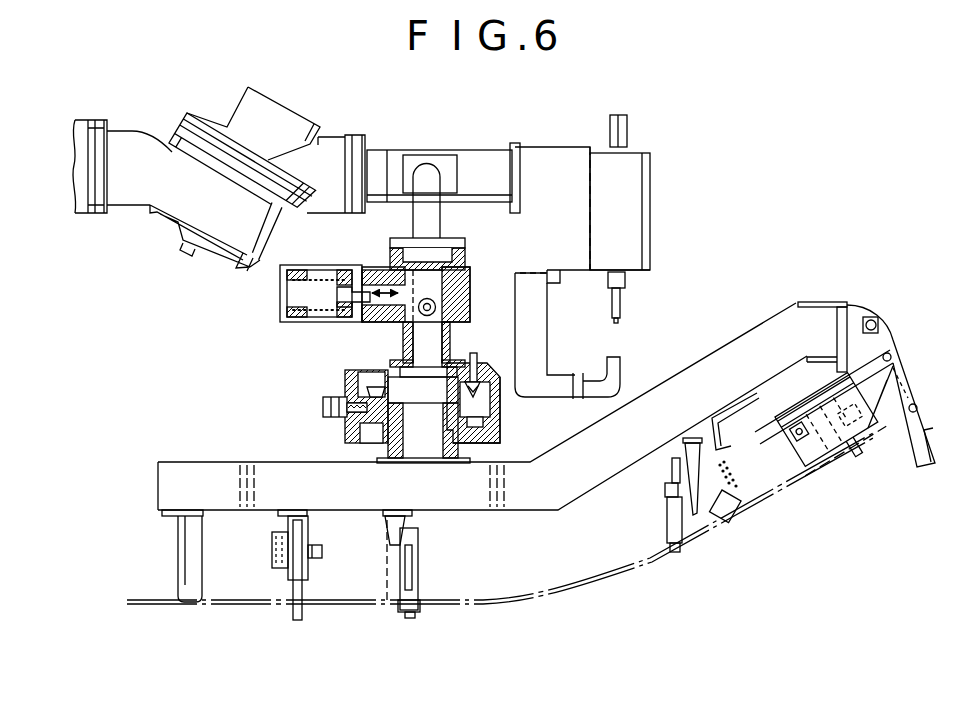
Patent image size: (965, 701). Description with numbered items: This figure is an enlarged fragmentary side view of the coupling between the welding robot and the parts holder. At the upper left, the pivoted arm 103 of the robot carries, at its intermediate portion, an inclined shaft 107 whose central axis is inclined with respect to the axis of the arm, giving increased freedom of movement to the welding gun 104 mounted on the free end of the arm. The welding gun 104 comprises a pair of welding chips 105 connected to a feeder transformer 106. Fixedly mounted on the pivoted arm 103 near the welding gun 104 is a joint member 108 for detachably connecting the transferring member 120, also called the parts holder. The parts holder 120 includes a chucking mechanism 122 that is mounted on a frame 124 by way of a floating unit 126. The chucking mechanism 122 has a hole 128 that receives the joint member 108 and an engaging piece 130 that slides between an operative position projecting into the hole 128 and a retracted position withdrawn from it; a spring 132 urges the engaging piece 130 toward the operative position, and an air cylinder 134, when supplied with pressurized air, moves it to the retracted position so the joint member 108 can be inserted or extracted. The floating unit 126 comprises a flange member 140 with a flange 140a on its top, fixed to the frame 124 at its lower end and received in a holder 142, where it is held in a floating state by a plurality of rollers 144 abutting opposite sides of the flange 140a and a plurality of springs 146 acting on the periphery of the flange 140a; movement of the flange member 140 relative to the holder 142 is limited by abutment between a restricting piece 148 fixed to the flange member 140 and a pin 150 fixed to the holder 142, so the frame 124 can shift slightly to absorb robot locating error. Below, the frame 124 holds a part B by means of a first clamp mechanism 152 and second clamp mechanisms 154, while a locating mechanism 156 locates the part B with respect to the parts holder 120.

The pivoted arm 103 is at (476, 150).
The welding gun 104 is at (650, 190).
The welding chips 105 is at (622, 318).
The feeder transformer 106 is at (562, 147).
The inclined shaft 107 is at (195, 255).
The joint member 108 is at (435, 306).
The transferring member 120 is at (824, 288).
The chucking mechanism 122 is at (272, 296).
The frame 124 is at (158, 490).
The floating unit 126 is at (401, 388).
The hole 128 is at (440, 256).
The engaging piece 130 is at (386, 267).
The spring 132 is at (320, 264).
The air cylinder 134 is at (337, 323).
The flange member 140 is at (401, 410).
The flange 140a is at (500, 412).
The holder 142 is at (368, 388).
The rollers 144 is at (363, 383).
The springs 146 is at (347, 415).
The restricting piece 148 is at (485, 405).
The pin 150 is at (474, 365).
The first clamp mechanism 152 is at (284, 618).
The second clamp mechanism 154 is at (392, 624).
The locating mechanism 156 is at (840, 478).
The part B is at (523, 600).